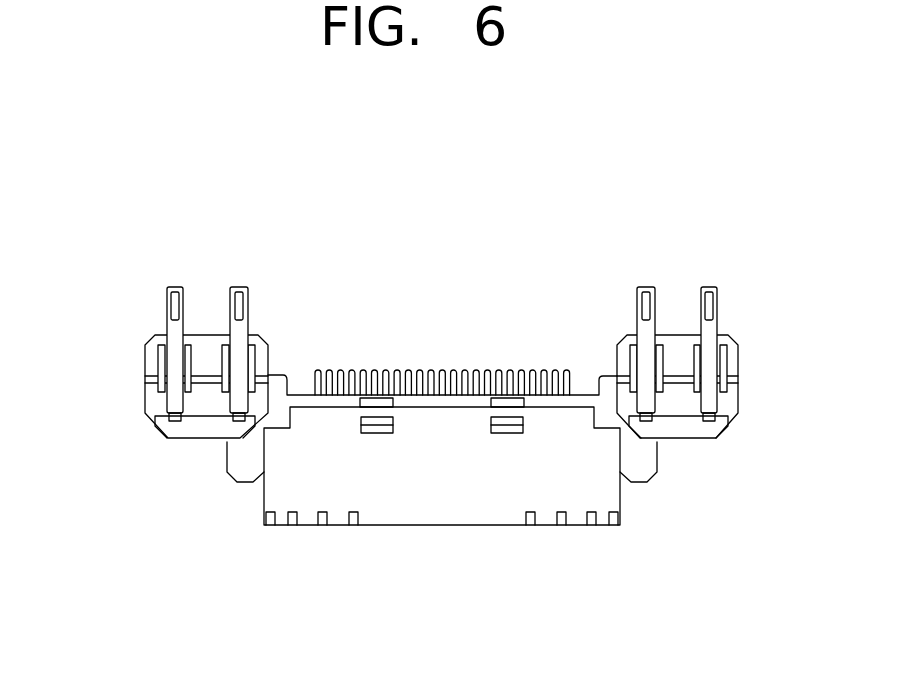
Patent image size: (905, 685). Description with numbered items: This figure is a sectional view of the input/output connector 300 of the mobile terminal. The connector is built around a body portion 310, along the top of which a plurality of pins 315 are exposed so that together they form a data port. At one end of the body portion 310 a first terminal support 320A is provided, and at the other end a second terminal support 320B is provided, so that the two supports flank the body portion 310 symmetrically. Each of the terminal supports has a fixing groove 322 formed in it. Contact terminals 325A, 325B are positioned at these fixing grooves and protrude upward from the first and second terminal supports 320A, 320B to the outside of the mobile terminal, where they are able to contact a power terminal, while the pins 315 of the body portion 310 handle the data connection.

The input/output connector 300 is at (262, 505).
The body portion 310 is at (432, 492).
The pins 315 is at (575, 372).
The first terminal support 320A is at (733, 407).
The second terminal support 320B is at (162, 369).
The fixing groove 322 is at (225, 366).
The first contact terminal 325A is at (645, 300).
The second contact terminal 325B is at (173, 303).